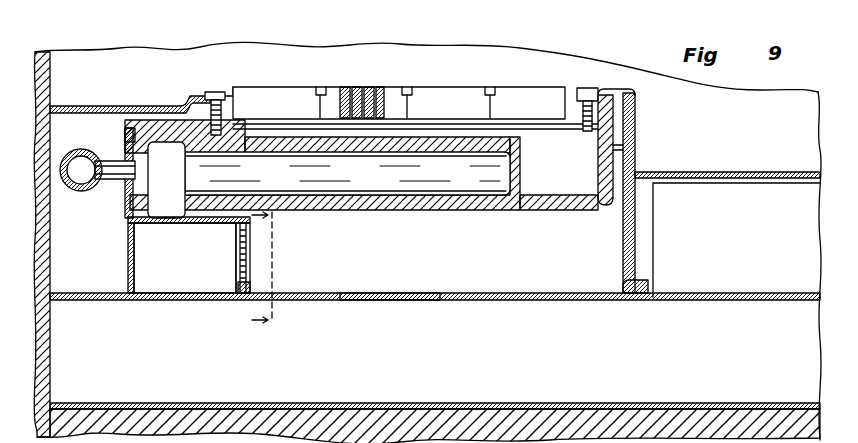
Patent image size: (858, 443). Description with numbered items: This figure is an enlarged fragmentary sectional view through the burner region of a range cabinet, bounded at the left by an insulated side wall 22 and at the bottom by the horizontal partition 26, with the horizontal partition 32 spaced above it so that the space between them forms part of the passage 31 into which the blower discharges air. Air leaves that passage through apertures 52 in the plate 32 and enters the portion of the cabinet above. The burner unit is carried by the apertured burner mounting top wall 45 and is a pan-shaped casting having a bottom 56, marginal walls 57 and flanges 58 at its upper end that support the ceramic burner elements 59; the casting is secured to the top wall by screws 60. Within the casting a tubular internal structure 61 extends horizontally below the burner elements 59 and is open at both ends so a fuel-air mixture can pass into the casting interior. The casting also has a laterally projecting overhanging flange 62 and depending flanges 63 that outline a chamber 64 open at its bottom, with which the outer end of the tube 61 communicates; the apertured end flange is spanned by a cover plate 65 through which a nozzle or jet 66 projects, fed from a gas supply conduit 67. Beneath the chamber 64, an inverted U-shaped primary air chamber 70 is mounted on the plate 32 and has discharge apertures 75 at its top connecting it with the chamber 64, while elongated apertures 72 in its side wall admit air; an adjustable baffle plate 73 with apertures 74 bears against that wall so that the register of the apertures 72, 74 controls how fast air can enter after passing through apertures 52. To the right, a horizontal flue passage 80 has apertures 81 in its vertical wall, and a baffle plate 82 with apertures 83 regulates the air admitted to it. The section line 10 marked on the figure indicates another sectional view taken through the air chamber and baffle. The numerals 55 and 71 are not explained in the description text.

The side wall 22 is at (38, 50).
The horizontal partition 26 is at (500, 430).
The passage 31 is at (340, 384).
The horizontal partition 32 is at (498, 301).
The apertures 52 is at (433, 301).
The burner mounting top wall 45 is at (130, 106).
The overhanging flange 62 is at (168, 128).
The housing 55 is at (477, 212).
The bottom 56 is at (545, 204).
The tubular internal structure 61 is at (508, 153).
The chamber 64 is at (180, 206).
The depending side and end flanges 63 is at (128, 216).
The cover plate 65 is at (125, 136).
The nozzle or jet 66 is at (112, 192).
The gas supply conduit 67 is at (78, 191).
The burner elements 59 is at (507, 100).
The flanges 58 is at (577, 126).
The screws 60 is at (222, 92).
The marginal walls 57 is at (598, 178).
The apertures 81 is at (623, 247).
The apertures 83 is at (633, 235).
The baffle plate 82 is at (648, 279).
The horizontal flue passage 80 is at (762, 242).
The primary air chamber 70 is at (178, 280).
The discharge apertures 75 is at (197, 224).
The enclosure side wall 71 is at (128, 270).
The apertures 72 is at (240, 264).
The apertures 74 is at (250, 254).
The adjustable baffle plate 73 is at (250, 287).
The section line 10 is at (276, 273).